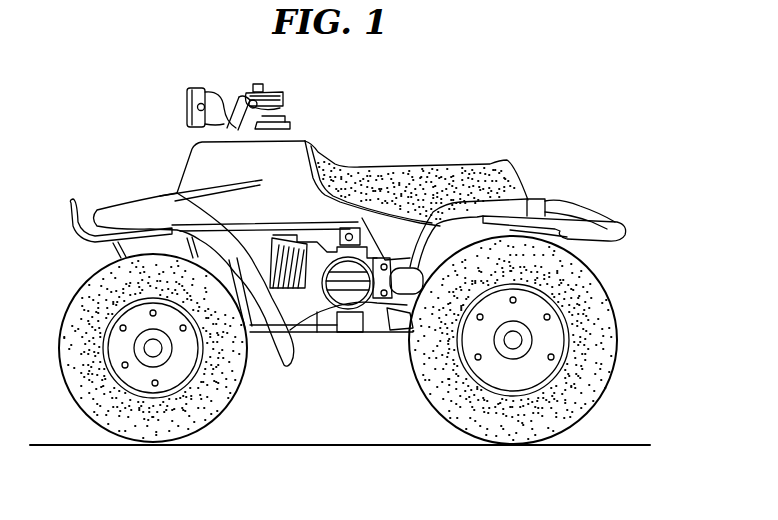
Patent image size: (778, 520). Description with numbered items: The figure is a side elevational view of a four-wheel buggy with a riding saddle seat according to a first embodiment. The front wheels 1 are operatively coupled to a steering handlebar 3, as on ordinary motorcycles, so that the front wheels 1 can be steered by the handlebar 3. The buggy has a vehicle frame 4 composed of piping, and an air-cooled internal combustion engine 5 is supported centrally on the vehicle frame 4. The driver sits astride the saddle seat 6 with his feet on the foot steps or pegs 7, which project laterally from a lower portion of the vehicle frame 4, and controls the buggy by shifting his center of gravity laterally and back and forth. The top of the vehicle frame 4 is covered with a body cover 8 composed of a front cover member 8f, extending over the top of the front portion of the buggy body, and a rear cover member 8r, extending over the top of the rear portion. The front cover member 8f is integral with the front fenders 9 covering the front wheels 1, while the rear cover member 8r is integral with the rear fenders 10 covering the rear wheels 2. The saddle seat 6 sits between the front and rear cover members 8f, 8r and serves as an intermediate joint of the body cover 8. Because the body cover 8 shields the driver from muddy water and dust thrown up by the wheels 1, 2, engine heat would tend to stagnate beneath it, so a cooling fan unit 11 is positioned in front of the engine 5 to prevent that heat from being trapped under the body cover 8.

The front wheel 1 is at (136, 442).
The rear wheel 2 is at (563, 428).
The steering handlebar 3 is at (268, 93).
The vehicle frame 4 is at (308, 352).
The internal combustion engine 5 is at (328, 302).
The saddle seat 6 is at (423, 163).
The foot steps 7 is at (352, 334).
The body cover 8 is at (347, 132).
The front cover member 8f is at (183, 173).
The rear cover member 8r is at (563, 198).
The front fender 9 is at (94, 243).
The rear fender 10 is at (451, 207).
The cooling fan unit 11 is at (250, 333).